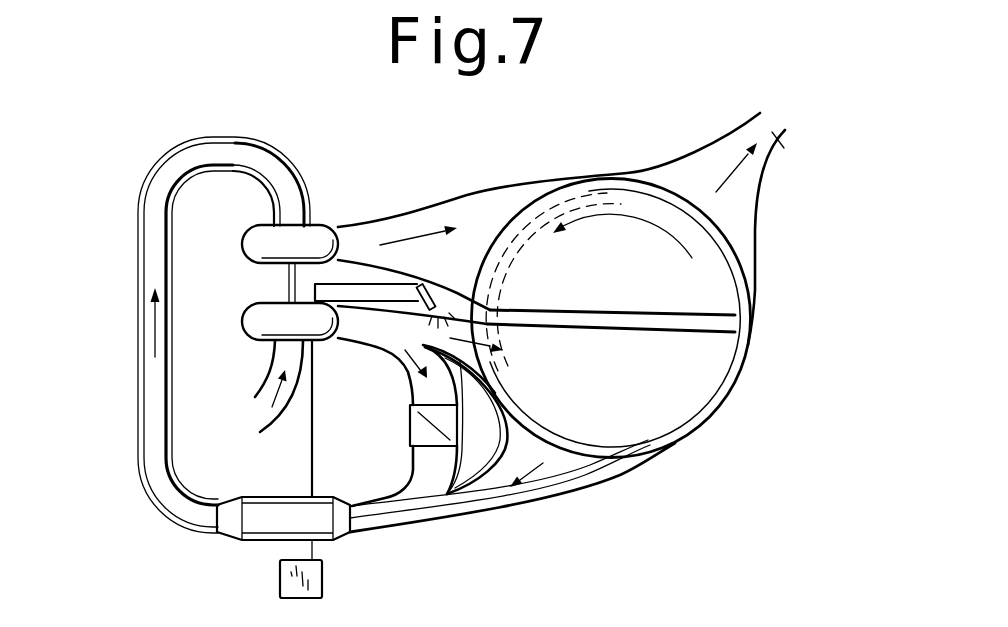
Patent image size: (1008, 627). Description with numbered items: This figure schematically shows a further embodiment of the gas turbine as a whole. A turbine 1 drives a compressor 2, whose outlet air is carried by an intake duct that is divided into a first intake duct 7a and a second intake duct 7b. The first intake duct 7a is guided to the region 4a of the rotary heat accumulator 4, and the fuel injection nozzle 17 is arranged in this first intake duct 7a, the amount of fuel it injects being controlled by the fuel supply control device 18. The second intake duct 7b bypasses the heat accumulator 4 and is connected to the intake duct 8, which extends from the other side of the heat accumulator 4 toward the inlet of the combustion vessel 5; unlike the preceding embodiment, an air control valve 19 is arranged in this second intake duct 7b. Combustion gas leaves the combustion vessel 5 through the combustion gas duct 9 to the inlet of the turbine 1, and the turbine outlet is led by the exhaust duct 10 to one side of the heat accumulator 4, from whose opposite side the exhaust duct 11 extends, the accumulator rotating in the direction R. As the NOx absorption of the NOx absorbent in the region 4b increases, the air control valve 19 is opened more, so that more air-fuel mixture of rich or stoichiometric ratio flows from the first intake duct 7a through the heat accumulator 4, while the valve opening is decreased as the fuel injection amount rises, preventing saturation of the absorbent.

The turbine 1 is at (248, 242).
The compressor 2 is at (243, 320).
The rotary heat accumulator 4 is at (749, 391).
The region of the heat accumulator 4a is at (683, 398).
The region of the heat accumulator 4b is at (713, 300).
The combustion vessel 5 is at (272, 496).
The first intake duct 7a is at (468, 342).
The second intake duct 7b is at (412, 462).
The intake duct 8 is at (490, 498).
The combustion gas duct 9 is at (148, 427).
The exhaust duct 10 is at (368, 236).
The exhaust duct 11 is at (780, 138).
The fuel injection nozzle 17 is at (428, 288).
The fuel supply control device 18 is at (285, 575).
The air control valve 19 is at (412, 426).
The rotation direction R is at (600, 214).